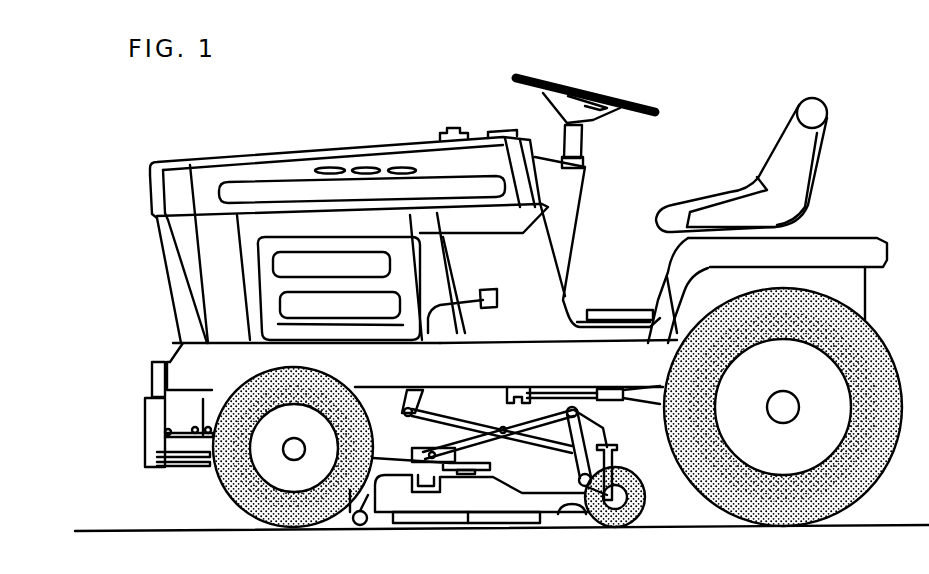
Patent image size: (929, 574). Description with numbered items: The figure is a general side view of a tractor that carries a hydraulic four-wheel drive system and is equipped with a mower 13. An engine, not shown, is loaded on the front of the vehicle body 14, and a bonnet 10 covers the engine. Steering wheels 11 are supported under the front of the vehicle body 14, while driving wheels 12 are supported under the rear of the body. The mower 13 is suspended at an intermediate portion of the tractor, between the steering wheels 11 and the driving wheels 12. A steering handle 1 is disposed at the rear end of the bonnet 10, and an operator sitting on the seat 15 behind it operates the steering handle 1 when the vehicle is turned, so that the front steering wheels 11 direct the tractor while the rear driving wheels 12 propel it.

The steering handle 1 is at (652, 103).
The bonnet 10 is at (328, 148).
The steering wheels 11 is at (227, 498).
The driving wheels 12 is at (880, 477).
The mower 13 is at (560, 493).
The vehicle body 14 is at (175, 362).
The seat 15 is at (741, 165).